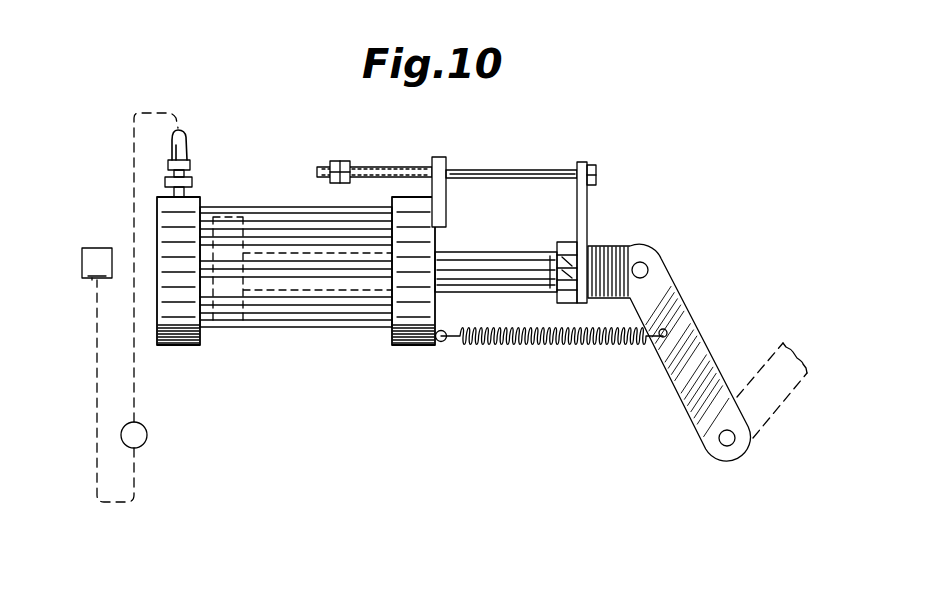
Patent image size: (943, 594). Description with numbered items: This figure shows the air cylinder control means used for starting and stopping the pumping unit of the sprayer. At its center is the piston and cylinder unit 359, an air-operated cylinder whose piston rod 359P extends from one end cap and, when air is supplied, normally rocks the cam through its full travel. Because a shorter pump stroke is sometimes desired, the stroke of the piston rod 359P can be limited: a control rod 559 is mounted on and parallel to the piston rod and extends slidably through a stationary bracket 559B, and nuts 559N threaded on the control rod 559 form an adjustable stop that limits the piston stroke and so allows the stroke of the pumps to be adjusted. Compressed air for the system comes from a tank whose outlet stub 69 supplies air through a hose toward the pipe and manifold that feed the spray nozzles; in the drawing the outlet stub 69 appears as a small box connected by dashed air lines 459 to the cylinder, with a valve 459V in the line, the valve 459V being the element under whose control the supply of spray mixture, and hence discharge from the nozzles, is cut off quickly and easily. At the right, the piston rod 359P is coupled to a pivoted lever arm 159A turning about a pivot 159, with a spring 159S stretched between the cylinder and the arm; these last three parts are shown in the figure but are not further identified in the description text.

The outlet stub 69 is at (94, 250).
The fluid conduit 459 is at (98, 480).
The valve 459V is at (147, 437).
The piston and cylinder unit 359 is at (297, 323).
The piston rod 359P is at (457, 268).
The control rod 559 is at (515, 170).
The stationary bracket 559B is at (442, 208).
The nuts 559N is at (334, 162).
The pivot pin 159 is at (735, 442).
The lever arm 159A is at (697, 403).
The return spring 159S is at (563, 348).